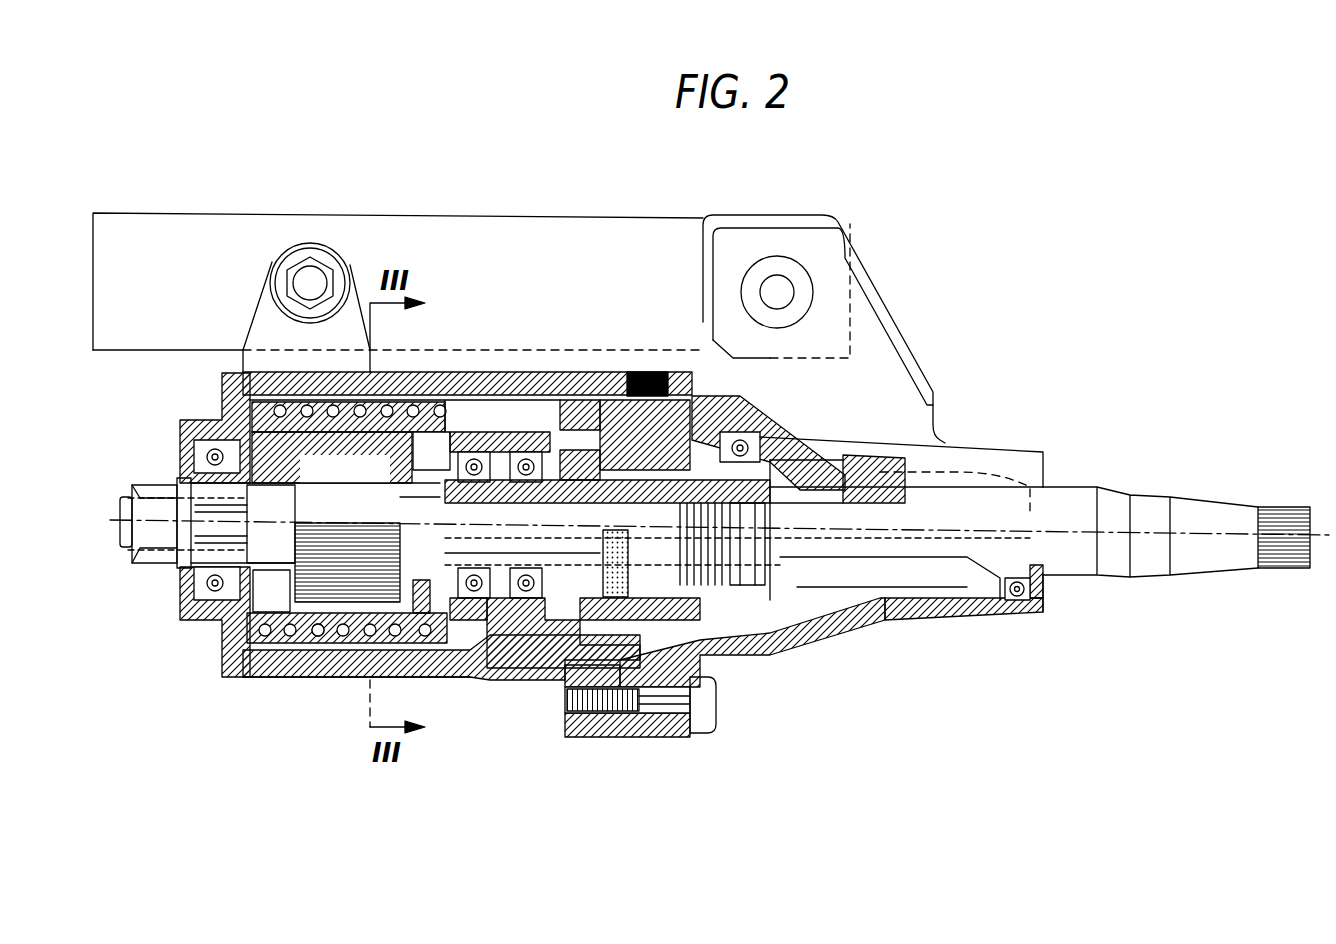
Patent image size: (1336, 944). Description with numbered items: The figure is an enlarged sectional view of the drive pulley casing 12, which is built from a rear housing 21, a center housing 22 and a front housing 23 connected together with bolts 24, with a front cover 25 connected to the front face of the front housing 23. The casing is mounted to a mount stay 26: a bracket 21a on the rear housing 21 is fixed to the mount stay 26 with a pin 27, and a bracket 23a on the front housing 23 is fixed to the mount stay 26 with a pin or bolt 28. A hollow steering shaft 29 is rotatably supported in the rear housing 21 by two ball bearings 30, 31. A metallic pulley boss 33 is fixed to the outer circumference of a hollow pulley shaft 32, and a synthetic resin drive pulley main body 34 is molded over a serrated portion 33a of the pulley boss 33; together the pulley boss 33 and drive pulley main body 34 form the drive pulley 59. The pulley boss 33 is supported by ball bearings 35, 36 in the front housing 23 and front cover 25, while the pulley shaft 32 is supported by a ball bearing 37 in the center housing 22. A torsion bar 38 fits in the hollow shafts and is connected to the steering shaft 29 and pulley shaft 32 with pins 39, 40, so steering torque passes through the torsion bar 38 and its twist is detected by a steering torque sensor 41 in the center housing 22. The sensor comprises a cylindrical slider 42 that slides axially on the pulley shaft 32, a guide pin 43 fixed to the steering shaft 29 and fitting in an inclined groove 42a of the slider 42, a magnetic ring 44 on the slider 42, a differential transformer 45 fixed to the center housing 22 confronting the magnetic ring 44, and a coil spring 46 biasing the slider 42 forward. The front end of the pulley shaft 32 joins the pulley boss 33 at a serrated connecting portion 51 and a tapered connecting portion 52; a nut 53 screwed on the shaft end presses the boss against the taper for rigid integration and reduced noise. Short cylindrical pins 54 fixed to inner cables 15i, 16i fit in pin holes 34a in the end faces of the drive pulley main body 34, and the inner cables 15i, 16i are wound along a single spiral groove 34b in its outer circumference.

The drive pulley casing 12 is at (517, 698).
The inner cable 15i is at (282, 405).
The inner cable 16i is at (487, 650).
The rear housing 21 is at (935, 637).
The bracket 21a is at (880, 297).
The center housing 22 is at (650, 723).
The front housing 23 is at (443, 688).
The bracket 23a is at (262, 314).
The bolt 24 is at (708, 700).
The front cover 25 is at (220, 637).
The mount stay 26 is at (512, 232).
The pin 27 is at (776, 292).
The pin or bolt 28 is at (318, 283).
The steering shaft 29 is at (965, 567).
The ball bearing 30 is at (1017, 600).
The ball bearing 31 is at (783, 430).
The pulley shaft 32 is at (292, 549).
The pulley boss 33 is at (338, 484).
The serrated portion 33a is at (352, 543).
The drive pulley main body 34 is at (246, 415).
The pin hole 34a is at (443, 410).
The spiral groove 34b is at (320, 637).
The ball bearing 35 is at (470, 398).
The ball bearing 36 is at (220, 420).
The ball bearing 37 is at (527, 450).
The torsion bar 38 is at (548, 450).
The pin 39 is at (838, 465).
The pin 40 is at (487, 546).
The steering torque sensor 41 is at (588, 653).
The cylindrical slider 42 is at (578, 440).
The inclined groove 42a is at (665, 440).
The guide pin 43 is at (772, 465).
The magnetic ring 44 is at (608, 445).
The differential transformer 45 is at (632, 590).
The coil spring 46 is at (712, 627).
The serrated connecting portion 51 is at (192, 480).
The tapered connecting portion 52 is at (367, 470).
The nut 53 is at (172, 560).
The pin 54 is at (446, 467).
The drive pulley 59 is at (399, 388).